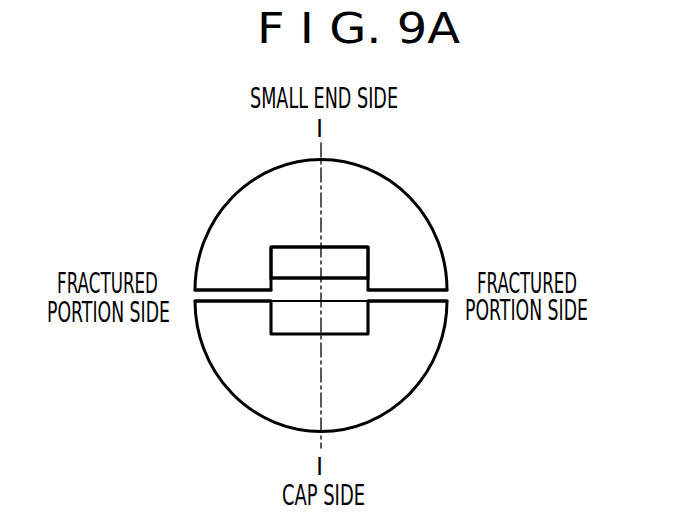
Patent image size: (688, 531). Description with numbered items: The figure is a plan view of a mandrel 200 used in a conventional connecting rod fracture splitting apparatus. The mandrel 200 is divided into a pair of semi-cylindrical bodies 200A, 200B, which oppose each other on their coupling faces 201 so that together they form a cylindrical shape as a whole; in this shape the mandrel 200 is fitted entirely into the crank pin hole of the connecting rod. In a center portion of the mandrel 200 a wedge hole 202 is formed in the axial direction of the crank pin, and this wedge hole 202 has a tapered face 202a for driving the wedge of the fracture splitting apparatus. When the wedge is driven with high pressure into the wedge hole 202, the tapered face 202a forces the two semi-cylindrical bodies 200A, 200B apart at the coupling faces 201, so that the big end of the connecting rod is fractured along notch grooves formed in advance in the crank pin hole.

The mandrel 200 is at (320, 274).
The semi-cylindrical body 200A is at (327, 381).
The semi-cylindrical body 200B is at (354, 210).
The coupling face 201 is at (238, 300).
The wedge hole 202 is at (293, 317).
The tapered face 202a is at (288, 253).